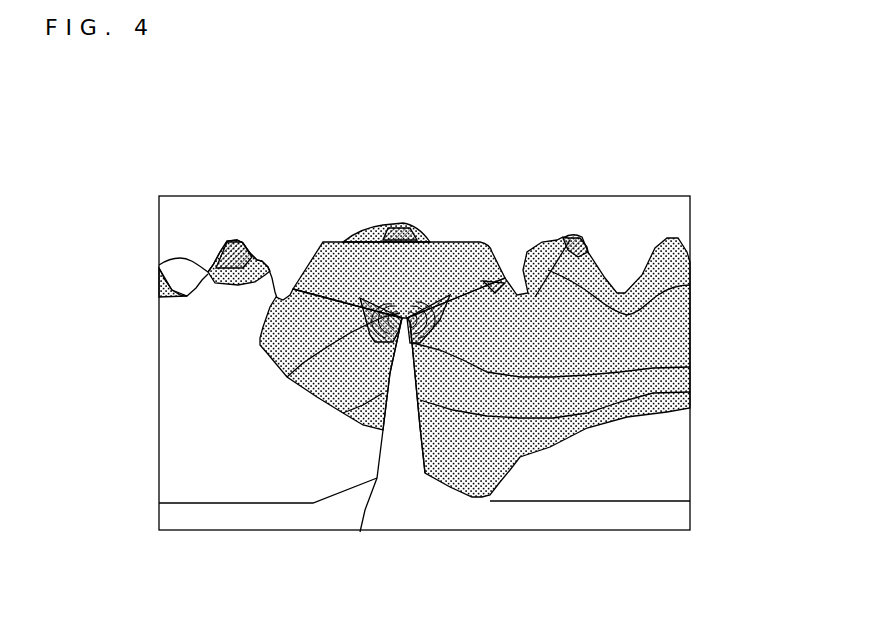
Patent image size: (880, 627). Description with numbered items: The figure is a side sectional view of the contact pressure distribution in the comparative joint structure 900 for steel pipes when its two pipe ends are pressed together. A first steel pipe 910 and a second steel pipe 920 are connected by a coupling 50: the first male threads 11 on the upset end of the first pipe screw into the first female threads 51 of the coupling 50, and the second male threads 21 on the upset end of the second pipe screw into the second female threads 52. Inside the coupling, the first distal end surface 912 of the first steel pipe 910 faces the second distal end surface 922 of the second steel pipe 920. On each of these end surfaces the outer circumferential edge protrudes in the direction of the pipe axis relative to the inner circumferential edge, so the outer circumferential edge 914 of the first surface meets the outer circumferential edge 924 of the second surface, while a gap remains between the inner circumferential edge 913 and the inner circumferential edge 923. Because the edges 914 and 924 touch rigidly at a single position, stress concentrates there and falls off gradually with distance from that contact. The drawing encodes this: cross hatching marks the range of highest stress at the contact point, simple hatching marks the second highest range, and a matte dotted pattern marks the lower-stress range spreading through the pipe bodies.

The joint structure for steel pipes 900 is at (178, 142).
The first male threads 11 is at (159, 265).
The first steel pipe 910 is at (203, 352).
The outer circumferential edge 914 is at (287, 377).
The first distal end surface 912 is at (343, 413).
The inner circumferential edge 913 is at (360, 532).
The inner circumferential edge 923 is at (425, 473).
The first female threads 51 is at (290, 258).
The coupling 50 is at (518, 223).
The second female threads 52 is at (623, 247).
The second male threads 21 is at (690, 285).
The second steel pipe 920 is at (690, 328).
The outer circumferential edge 924 is at (690, 367).
The second distal end surface 922 is at (690, 392).